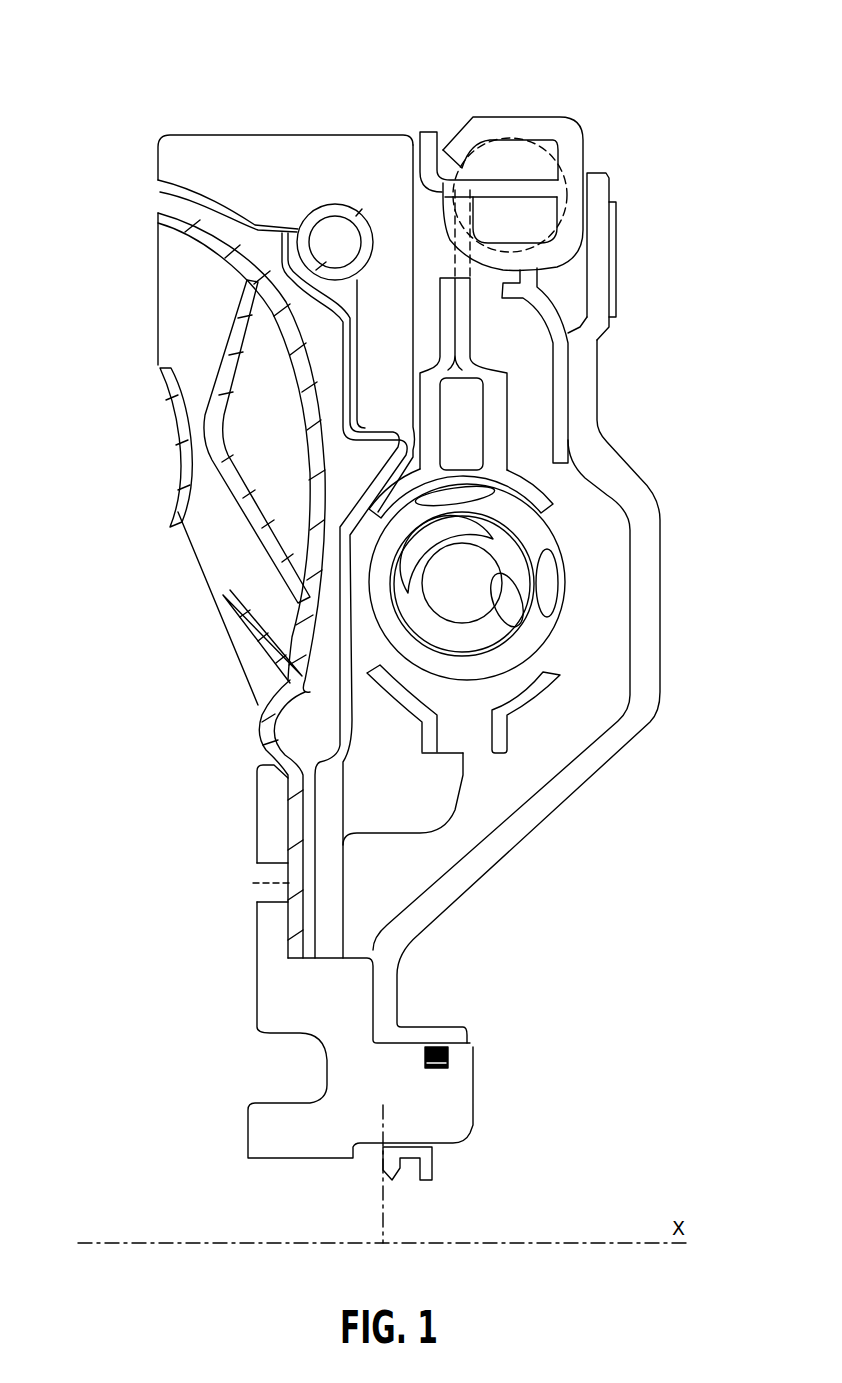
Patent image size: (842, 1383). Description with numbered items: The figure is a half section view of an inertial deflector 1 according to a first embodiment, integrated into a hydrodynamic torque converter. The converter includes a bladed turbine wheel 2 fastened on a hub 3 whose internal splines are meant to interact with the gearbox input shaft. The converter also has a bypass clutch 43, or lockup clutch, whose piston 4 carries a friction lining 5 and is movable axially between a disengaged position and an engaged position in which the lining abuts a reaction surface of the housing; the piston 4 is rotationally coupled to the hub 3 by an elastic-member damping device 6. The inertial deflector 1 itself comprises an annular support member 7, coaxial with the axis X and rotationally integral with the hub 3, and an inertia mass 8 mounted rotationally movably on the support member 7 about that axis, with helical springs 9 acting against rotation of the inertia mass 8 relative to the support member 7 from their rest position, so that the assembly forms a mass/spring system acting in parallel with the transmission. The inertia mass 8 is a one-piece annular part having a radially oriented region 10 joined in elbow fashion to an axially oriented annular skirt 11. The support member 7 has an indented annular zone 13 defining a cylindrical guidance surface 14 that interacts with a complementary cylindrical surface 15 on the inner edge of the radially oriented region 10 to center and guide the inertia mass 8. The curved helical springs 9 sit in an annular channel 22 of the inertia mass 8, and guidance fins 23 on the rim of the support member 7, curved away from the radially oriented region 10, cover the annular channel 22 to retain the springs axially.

The inertial deflector 1 is at (258, 112).
The bladed turbine wheel 2 is at (188, 297).
The hub 3 is at (258, 1138).
The piston 4 is at (602, 472).
The friction lining 5 is at (616, 227).
The elastic-member damping device 6 is at (596, 574).
The support member 7 is at (313, 750).
The inertia mass 8 is at (336, 150).
The helical springs 9 is at (347, 245).
The radially oriented region 10 is at (383, 353).
The axially oriented annular skirt 11 is at (193, 150).
The indented annular zone 13 is at (400, 436).
The cylindrical guidance surface 14 is at (356, 442).
The complementary cylindrical surface 15 is at (345, 412).
The annular channel 22 is at (333, 218).
The guidance fins 23 is at (160, 192).
The bypass clutch 43 is at (593, 340).